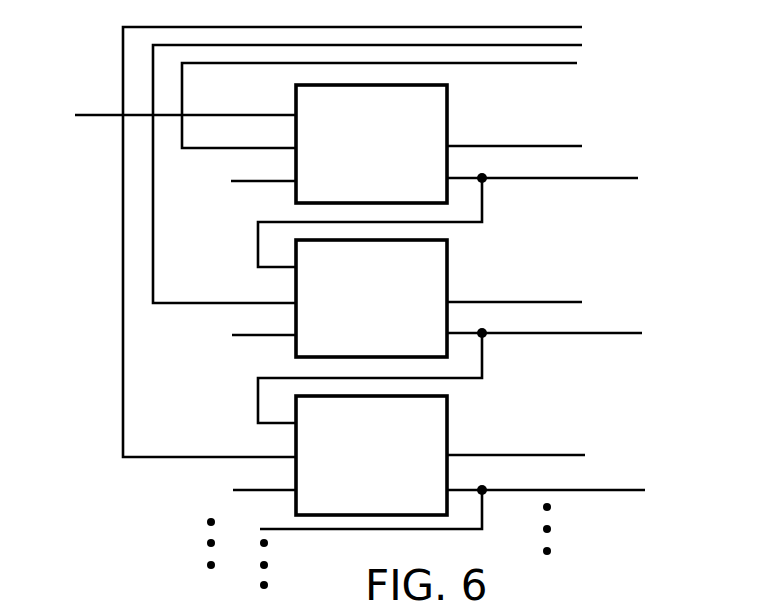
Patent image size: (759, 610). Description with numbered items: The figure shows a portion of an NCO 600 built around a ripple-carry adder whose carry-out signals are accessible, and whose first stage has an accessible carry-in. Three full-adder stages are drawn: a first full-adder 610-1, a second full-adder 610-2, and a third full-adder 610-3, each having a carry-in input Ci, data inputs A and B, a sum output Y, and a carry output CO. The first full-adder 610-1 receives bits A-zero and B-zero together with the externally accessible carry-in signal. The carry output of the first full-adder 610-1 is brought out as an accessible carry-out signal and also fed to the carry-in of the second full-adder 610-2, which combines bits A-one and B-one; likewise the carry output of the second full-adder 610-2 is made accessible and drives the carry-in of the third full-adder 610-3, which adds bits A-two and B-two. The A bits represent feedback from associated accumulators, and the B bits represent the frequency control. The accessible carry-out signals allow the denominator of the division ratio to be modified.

The NCO 600 is at (374, 308).
The first stage adder 610-1 is at (431, 122).
The second full-adder 610-2 is at (431, 277).
The third full-adder 610-3 is at (431, 433).